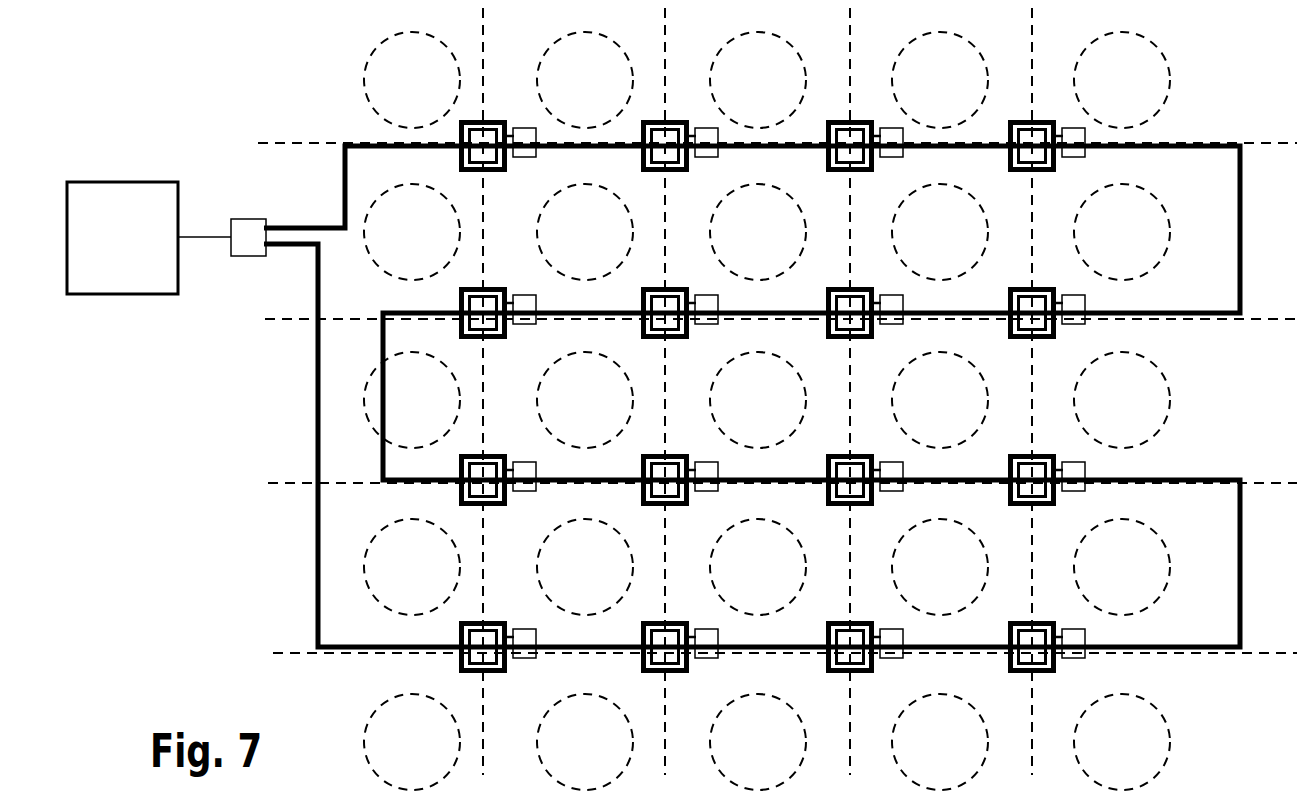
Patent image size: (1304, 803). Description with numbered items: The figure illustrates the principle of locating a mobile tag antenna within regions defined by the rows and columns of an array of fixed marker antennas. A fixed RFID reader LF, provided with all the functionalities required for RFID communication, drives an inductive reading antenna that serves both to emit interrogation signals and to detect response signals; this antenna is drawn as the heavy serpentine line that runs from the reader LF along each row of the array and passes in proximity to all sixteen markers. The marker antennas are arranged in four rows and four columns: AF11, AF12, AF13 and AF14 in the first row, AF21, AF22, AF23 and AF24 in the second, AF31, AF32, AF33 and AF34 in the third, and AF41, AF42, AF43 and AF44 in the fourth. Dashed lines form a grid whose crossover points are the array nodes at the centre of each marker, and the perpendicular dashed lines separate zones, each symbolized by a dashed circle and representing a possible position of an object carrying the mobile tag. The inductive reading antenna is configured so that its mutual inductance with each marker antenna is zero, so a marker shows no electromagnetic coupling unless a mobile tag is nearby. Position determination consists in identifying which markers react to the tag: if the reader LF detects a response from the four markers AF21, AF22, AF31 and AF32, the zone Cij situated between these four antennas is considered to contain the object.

The fixed RFID reader LF is at (150, 296).
The zone Cij is at (585, 400).
The marker antenna AF11 is at (498, 170).
The marker antenna AF12 is at (680, 170).
The marker antenna AF13 is at (866, 170).
The marker antenna AF14 is at (1048, 170).
The marker antenna AF21 is at (498, 337).
The marker antenna AF22 is at (680, 337).
The marker antenna AF23 is at (866, 337).
The marker antenna AF24 is at (1048, 337).
The marker antenna AF31 is at (498, 505).
The marker antenna AF32 is at (681, 505).
The marker antenna AF33 is at (866, 505).
The marker antenna AF34 is at (1048, 505).
The marker antenna AF41 is at (498, 672).
The marker antenna AF42 is at (681, 672).
The marker antenna AF43 is at (866, 672).
The marker antenna AF44 is at (1048, 672).